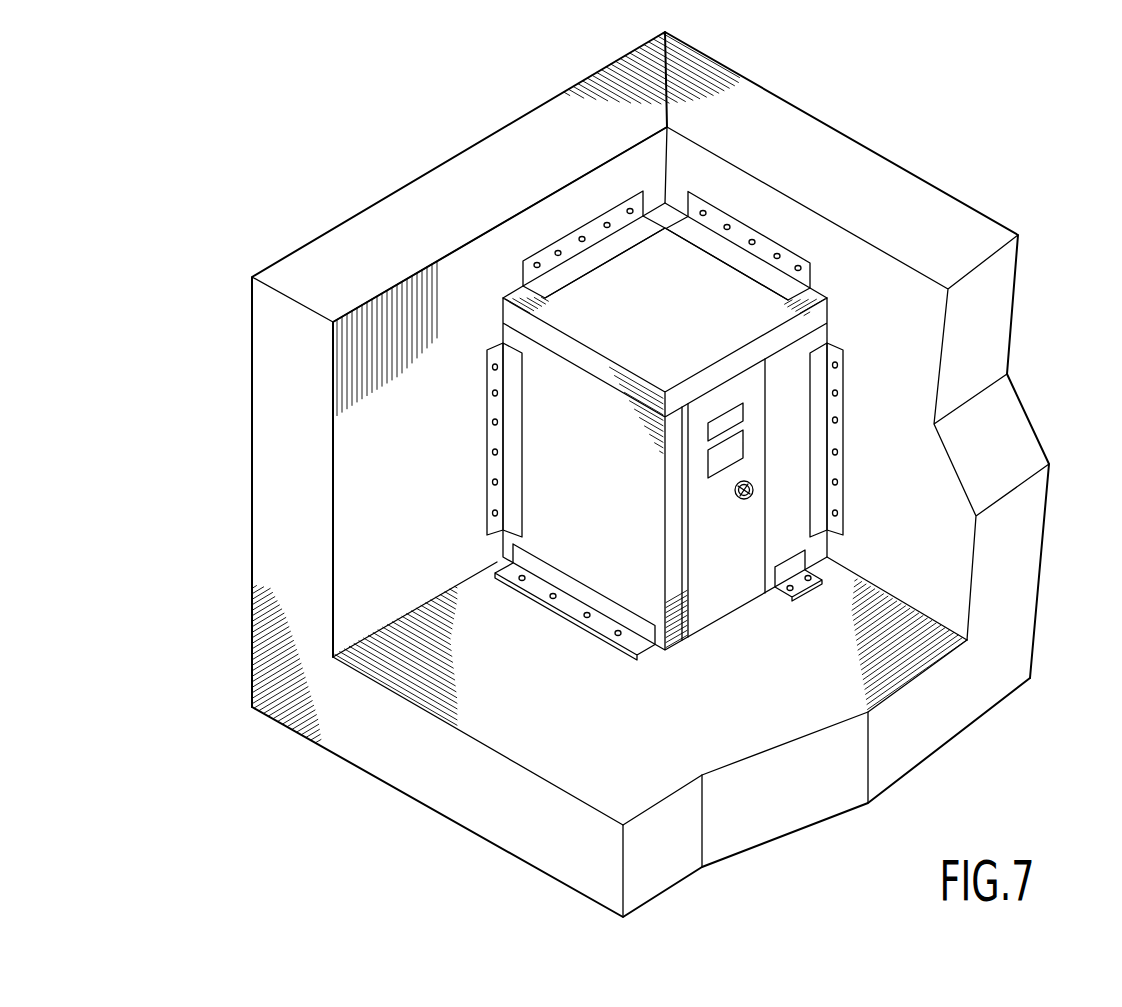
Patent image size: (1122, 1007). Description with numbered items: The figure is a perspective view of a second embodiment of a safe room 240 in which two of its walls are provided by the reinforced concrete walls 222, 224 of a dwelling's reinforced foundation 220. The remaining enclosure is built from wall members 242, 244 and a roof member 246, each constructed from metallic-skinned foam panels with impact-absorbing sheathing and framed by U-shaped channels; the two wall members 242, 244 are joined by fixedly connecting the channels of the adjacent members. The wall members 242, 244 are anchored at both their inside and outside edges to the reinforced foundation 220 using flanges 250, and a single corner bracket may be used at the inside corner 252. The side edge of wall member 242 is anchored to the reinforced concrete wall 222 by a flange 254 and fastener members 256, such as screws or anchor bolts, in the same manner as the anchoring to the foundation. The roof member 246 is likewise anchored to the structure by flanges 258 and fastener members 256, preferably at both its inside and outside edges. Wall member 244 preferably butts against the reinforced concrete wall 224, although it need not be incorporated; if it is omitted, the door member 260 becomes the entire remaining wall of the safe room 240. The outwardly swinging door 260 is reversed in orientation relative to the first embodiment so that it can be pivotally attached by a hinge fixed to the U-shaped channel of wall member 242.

The reinforced foundation 220 is at (482, 812).
The reinforced concrete wall 222 is at (341, 491).
The reinforced concrete wall 224 is at (908, 313).
The safe room 240 is at (652, 706).
The wall member 242 is at (592, 552).
The wall member 244 is at (788, 507).
The roof member 246 is at (683, 276).
The flanges 250 is at (602, 625).
The inside corner 252 is at (830, 556).
The flange 254 is at (493, 407).
The fastener members 256 is at (557, 256).
The flanges 258 is at (588, 226).
The door member 260 is at (710, 604).